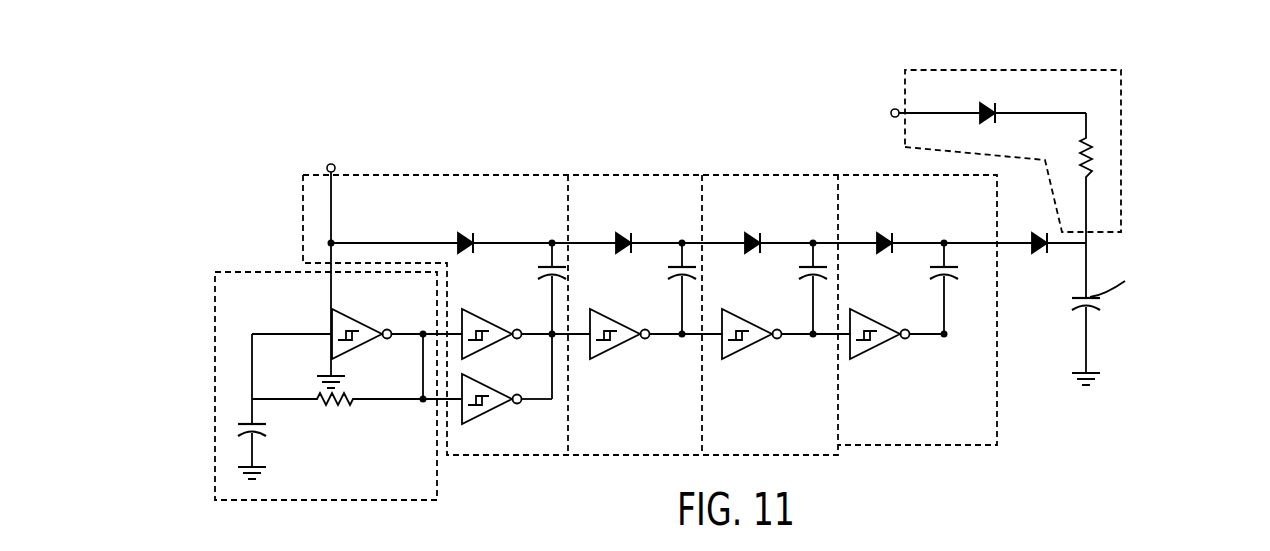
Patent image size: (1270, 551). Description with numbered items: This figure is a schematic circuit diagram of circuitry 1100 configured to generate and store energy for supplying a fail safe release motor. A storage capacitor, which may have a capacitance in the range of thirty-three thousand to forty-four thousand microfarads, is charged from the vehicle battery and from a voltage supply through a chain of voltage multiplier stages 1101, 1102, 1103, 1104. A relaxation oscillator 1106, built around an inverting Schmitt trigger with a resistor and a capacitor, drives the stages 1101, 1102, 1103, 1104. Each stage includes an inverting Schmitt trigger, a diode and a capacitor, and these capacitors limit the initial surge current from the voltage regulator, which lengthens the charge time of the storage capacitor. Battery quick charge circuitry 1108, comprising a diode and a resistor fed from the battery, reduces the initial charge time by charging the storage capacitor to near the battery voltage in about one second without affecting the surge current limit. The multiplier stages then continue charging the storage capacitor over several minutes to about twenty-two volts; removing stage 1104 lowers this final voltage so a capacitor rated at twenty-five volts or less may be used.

The circuitry 1100 is at (254, 149).
The voltage multiplier stage 1101 is at (520, 172).
The voltage multiplier stage 1102 is at (672, 172).
The voltage multiplier stage 1103 is at (812, 172).
The voltage multiplier stage 1104 is at (880, 172).
The relaxation oscillator 1106 is at (272, 265).
The battery quick charge circuitry 1108 is at (1121, 118).